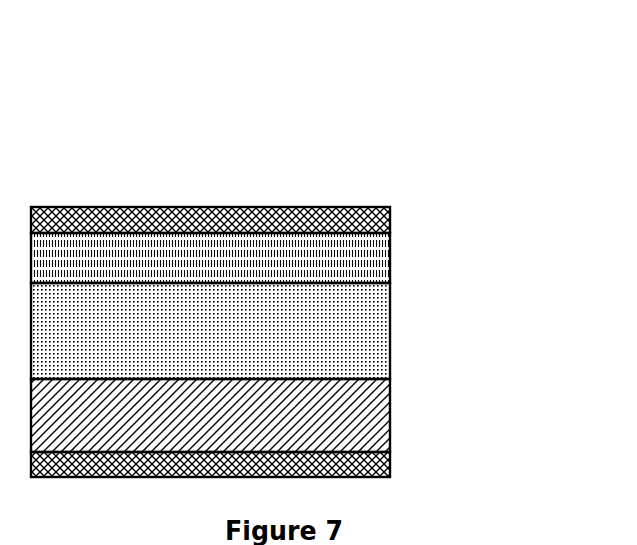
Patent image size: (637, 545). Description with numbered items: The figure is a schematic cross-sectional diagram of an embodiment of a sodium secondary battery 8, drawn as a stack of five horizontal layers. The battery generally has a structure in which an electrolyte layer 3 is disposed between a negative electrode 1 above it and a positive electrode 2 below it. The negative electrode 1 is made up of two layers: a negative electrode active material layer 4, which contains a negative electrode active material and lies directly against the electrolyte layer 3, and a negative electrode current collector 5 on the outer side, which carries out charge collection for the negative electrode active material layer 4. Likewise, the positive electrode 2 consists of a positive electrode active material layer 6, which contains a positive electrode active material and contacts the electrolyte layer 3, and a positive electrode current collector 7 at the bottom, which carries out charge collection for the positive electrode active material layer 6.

The sodium secondary battery 8 is at (312, 257).
The negative electrode 1 is at (311, 240).
The positive electrode 2 is at (311, 431).
The electrolyte layer 3 is at (387, 333).
The negative electrode active material layer 4 is at (387, 258).
The negative electrode current collector 5 is at (387, 222).
The positive electrode active material layer 6 is at (387, 425).
The positive electrode current collector 7 is at (387, 463).